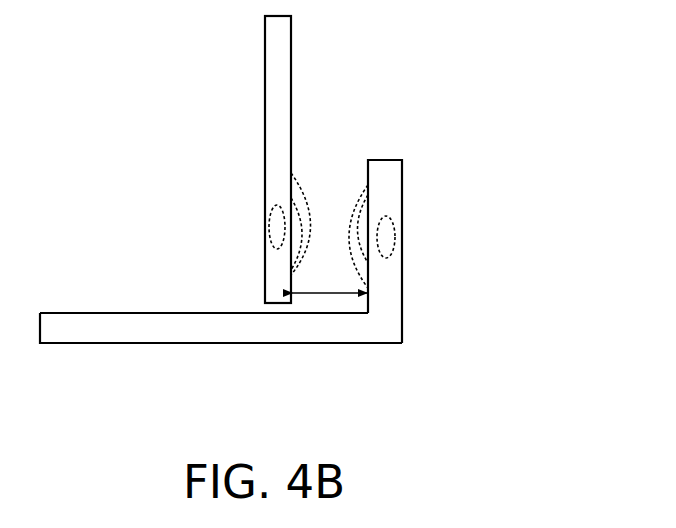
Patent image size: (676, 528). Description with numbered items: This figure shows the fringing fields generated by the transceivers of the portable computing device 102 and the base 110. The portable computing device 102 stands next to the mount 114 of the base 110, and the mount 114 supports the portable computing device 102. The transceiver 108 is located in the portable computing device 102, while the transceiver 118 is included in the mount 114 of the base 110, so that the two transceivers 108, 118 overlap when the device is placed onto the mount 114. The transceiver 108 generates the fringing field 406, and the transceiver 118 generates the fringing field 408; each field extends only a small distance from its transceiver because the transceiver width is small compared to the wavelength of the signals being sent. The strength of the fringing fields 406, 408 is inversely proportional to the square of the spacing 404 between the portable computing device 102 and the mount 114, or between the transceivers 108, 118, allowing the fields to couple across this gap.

The portable computing device 102 is at (242, 135).
The transceiver 108 is at (268, 227).
The base 110 is at (345, 360).
The mount 114 is at (403, 307).
The transceiver 118 is at (396, 236).
The spacing 404 is at (328, 302).
The fringing field 406 is at (313, 176).
The fringing field 408 is at (358, 176).